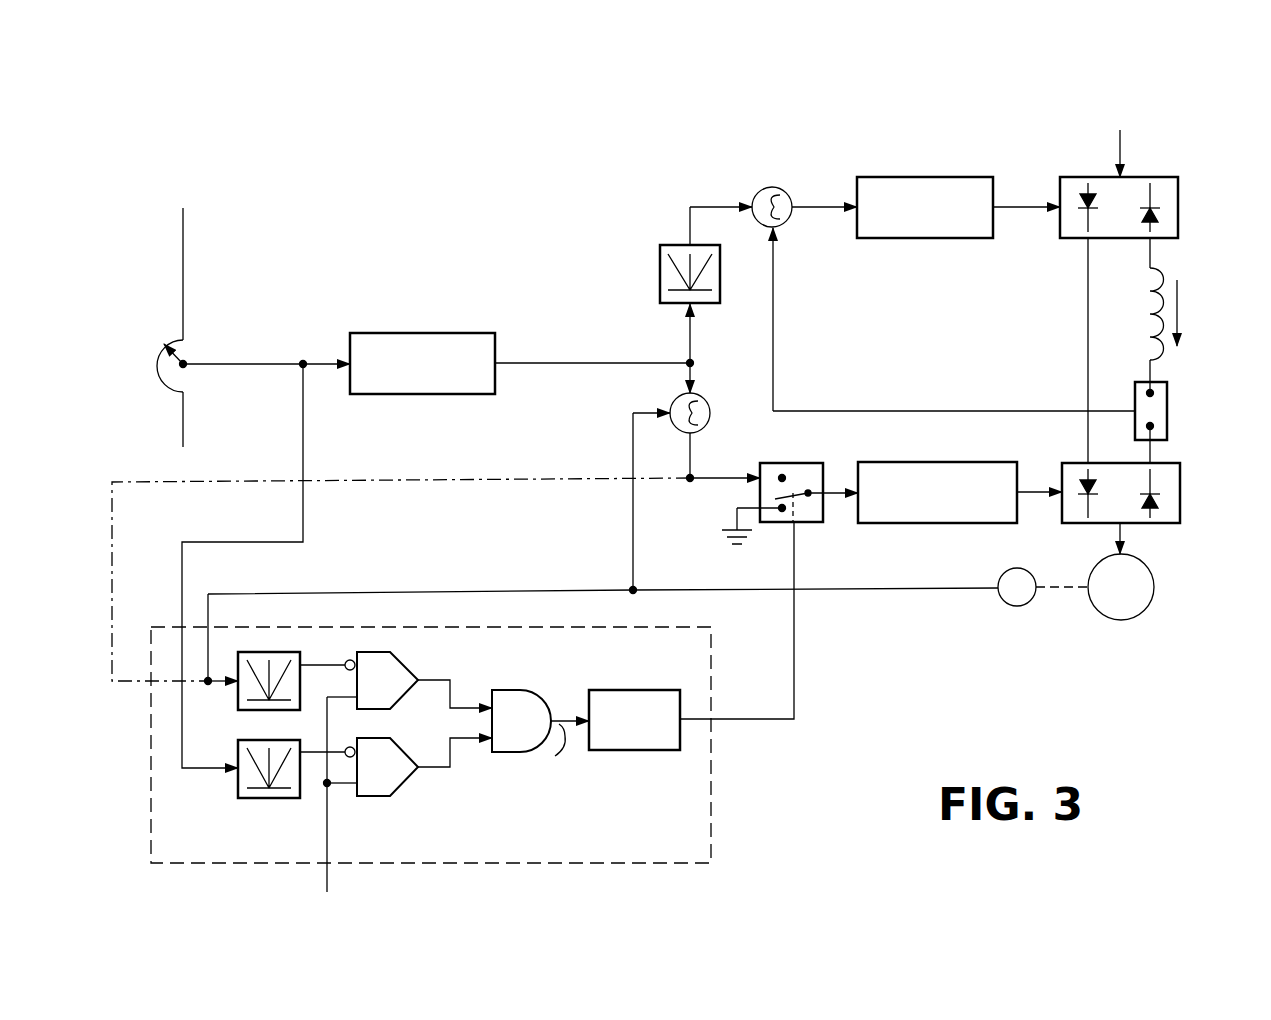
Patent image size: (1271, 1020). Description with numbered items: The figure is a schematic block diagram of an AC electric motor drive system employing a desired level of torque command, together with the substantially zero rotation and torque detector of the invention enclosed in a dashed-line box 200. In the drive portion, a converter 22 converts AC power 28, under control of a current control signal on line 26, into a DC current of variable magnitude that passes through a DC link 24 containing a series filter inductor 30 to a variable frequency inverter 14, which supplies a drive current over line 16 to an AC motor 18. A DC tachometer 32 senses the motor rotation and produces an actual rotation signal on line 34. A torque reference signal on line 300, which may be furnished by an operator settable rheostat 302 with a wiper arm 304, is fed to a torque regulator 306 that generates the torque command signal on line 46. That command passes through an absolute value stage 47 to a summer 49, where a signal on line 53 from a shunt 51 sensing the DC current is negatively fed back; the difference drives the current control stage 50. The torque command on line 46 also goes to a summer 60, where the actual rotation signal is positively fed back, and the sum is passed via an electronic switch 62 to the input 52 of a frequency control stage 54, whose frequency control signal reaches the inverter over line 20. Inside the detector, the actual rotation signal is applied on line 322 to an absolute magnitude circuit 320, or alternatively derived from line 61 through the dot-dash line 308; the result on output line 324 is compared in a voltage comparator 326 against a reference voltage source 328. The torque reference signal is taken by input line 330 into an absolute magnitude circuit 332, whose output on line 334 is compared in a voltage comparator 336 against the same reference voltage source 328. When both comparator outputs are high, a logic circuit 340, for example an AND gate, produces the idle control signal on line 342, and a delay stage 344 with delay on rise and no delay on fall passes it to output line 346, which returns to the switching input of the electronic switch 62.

The variable frequency inverter 14 is at (1184, 486).
The line 16 is at (1128, 533).
The AC motor 18 is at (1155, 596).
The line 20 is at (1037, 484).
The converter 22 is at (1180, 220).
The DC link 24 is at (1198, 302).
The line 26 is at (1031, 208).
The AC power 28 is at (1122, 146).
The inductor 30 is at (1150, 304).
The DC tachometer 32 is at (1017, 606).
The line 34 is at (928, 586).
The line 46 is at (525, 366).
The absolute value stage 47 is at (664, 244).
The summer 49 is at (771, 190).
The current control stage 50 is at (906, 177).
The shunt 51 is at (1170, 412).
The input 52 is at (832, 500).
The line 53 is at (777, 308).
The frequency control stage 54 is at (939, 464).
The summer 60 is at (704, 406).
The line 61 is at (710, 478).
The electronic switch 62 is at (802, 463).
The dashed-line box 200 is at (712, 792).
The line 300 is at (244, 368).
The operator settable rheostat 302 is at (184, 298).
The wiper arm 304 is at (168, 352).
The torque regulator 306 is at (416, 332).
The dot-dash line 308 is at (596, 481).
The absolute magnitude circuit 320 is at (245, 652).
The line 322 is at (222, 684).
The output line 324 is at (320, 664).
The voltage comparator 326 is at (405, 662).
The reference voltage source 328 is at (329, 835).
The input line 330 is at (195, 772).
The absolute magnitude circuit 332 is at (288, 802).
The line 334 is at (314, 750).
The voltage comparator 336 is at (405, 749).
The logic circuit 340 is at (523, 692).
The line 342 is at (568, 714).
The delay stage 344 is at (650, 688).
The output line 346 is at (796, 658).